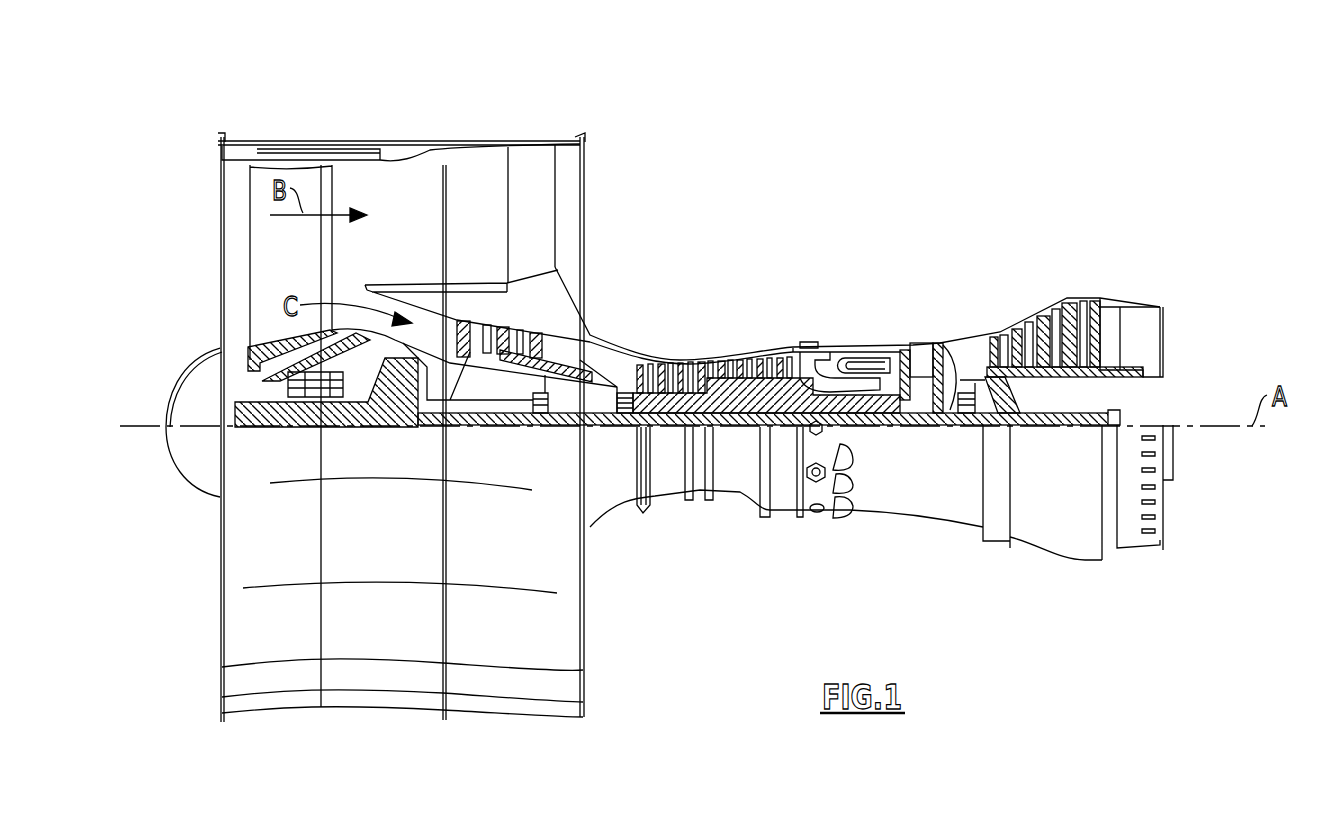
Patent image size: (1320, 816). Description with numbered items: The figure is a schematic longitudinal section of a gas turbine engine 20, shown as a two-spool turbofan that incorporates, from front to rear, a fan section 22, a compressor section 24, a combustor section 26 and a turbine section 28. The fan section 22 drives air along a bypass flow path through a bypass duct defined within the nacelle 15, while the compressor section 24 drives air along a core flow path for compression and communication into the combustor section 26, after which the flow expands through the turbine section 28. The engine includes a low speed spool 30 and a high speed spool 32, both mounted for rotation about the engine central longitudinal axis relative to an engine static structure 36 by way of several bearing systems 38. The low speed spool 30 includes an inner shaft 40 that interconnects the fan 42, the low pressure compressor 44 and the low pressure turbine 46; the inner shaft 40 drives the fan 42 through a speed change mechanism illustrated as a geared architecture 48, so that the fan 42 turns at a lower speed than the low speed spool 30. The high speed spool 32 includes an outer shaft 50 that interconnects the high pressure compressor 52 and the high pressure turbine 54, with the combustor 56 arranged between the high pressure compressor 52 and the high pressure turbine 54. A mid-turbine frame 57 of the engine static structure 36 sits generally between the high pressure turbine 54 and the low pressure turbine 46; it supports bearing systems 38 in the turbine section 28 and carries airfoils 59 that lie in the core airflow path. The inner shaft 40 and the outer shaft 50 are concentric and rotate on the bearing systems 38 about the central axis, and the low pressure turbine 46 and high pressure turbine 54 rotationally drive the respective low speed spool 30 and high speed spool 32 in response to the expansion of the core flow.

The nacelle 15 is at (405, 142).
The gas turbine engine 20 is at (858, 194).
The fan section 22 is at (330, 137).
The compressor section 24 is at (630, 337).
The combustor section 26 is at (853, 323).
The turbine section 28 is at (1000, 289).
The low speed spool 30 is at (740, 428).
The high speed spool 32 is at (787, 362).
The engine static structure 36 is at (780, 513).
The bearing systems 38 is at (540, 410).
The inner shaft 40 is at (603, 433).
The fan 42 is at (305, 268).
The low pressure compressor 44 is at (503, 333).
The low pressure turbine 46 is at (1050, 303).
The geared architecture 48 is at (406, 410).
The outer shaft 50 is at (866, 428).
The high pressure compressor 52 is at (714, 388).
The high pressure turbine 54 is at (921, 347).
The combustor 56 is at (857, 365).
The mid-turbine frame 57 is at (963, 332).
The airfoils 59 is at (990, 380).